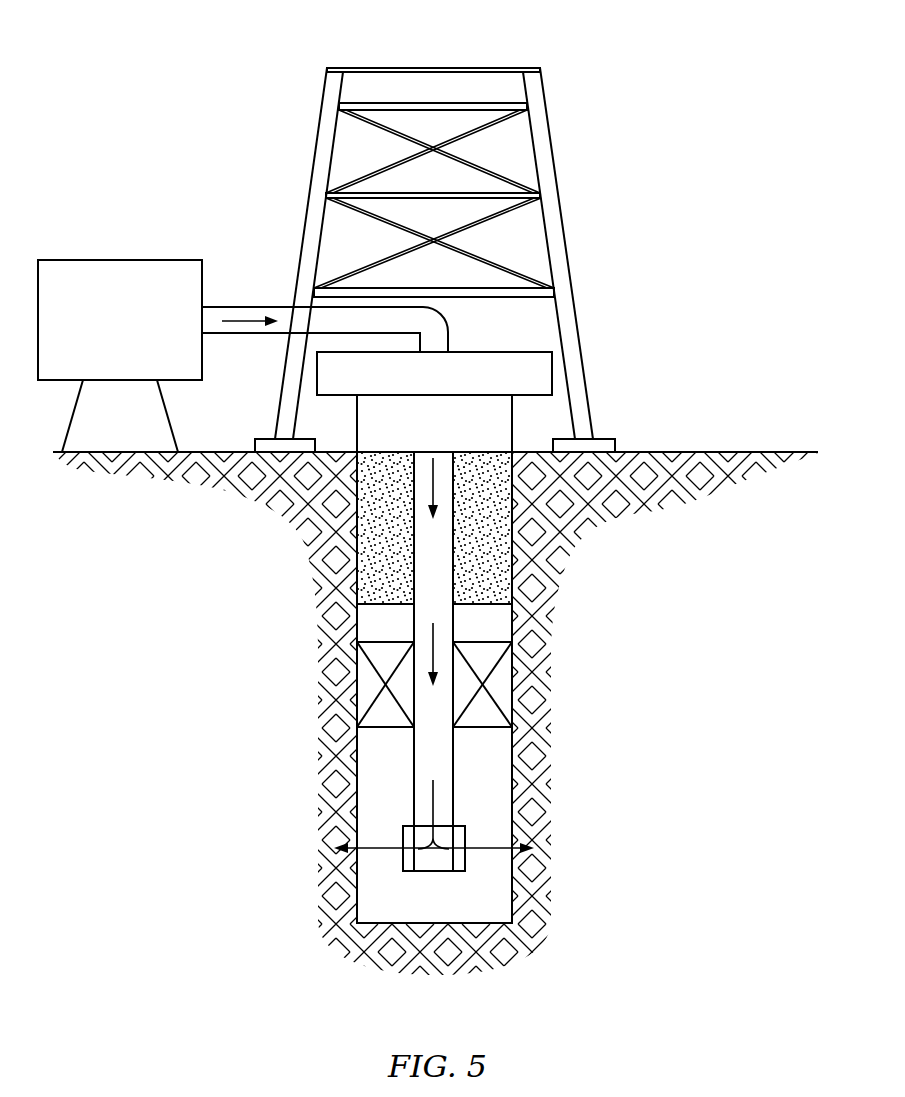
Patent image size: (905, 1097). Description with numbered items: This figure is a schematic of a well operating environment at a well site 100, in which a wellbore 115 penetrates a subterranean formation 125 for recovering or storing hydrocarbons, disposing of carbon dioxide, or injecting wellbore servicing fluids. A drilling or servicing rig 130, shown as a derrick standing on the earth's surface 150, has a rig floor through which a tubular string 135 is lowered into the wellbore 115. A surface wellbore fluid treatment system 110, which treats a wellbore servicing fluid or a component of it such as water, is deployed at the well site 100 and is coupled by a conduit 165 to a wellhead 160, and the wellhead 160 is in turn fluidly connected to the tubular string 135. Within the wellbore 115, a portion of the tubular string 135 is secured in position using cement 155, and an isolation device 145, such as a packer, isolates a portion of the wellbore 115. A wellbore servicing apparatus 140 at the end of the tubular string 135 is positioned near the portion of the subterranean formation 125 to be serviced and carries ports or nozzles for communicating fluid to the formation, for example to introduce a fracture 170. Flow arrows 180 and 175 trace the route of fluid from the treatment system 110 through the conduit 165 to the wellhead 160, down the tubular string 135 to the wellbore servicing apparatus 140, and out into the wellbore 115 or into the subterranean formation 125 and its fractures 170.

The well site 100 is at (163, 80).
The surface wellbore fluid treatment (SWFT) system 110 is at (93, 338).
The wellbore 115 is at (372, 807).
The subterranean formation 125 is at (338, 630).
The drilling or servicing rig 130 is at (482, 77).
The tubular string 135 is at (412, 767).
The wellbore servicing apparatus 140 is at (467, 832).
The isolation device 145 is at (503, 678).
The earth's surface 150 is at (683, 452).
The cement 155 is at (372, 562).
The wellhead 160 is at (533, 376).
The conduit 165 is at (253, 337).
The fracture 170 is at (340, 851).
The flow arrows 175 is at (433, 632).
The flow arrows 180 is at (223, 318).